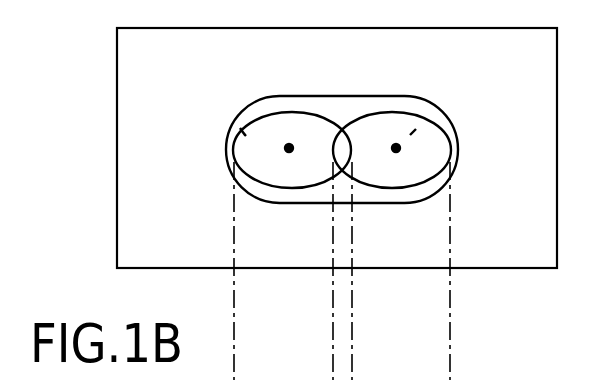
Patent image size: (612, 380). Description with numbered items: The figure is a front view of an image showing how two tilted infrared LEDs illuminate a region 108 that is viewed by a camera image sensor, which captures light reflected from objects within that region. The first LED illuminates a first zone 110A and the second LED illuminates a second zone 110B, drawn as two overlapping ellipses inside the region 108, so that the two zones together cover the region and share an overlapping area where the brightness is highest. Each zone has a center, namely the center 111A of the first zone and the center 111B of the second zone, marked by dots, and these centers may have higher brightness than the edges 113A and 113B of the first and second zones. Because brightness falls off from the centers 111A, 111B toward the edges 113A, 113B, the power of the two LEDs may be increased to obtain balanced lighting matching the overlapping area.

The region 108 is at (458, 150).
The first zone 110A is at (265, 122).
The second zone 110B is at (392, 120).
The center of the first zone 111A is at (289, 148).
The center of the second zone 111B is at (396, 148).
The edge of the first zone 113A is at (245, 133).
The edge of the second zone 113B is at (411, 133).